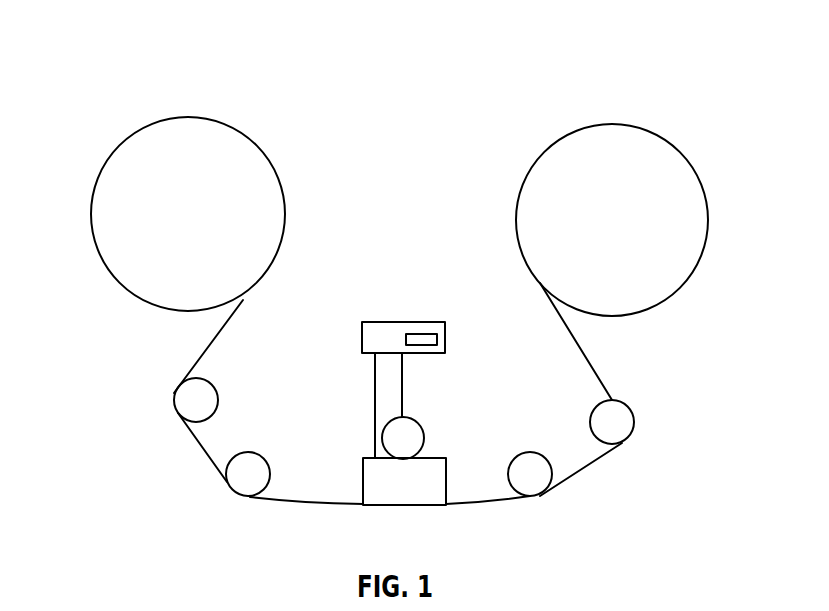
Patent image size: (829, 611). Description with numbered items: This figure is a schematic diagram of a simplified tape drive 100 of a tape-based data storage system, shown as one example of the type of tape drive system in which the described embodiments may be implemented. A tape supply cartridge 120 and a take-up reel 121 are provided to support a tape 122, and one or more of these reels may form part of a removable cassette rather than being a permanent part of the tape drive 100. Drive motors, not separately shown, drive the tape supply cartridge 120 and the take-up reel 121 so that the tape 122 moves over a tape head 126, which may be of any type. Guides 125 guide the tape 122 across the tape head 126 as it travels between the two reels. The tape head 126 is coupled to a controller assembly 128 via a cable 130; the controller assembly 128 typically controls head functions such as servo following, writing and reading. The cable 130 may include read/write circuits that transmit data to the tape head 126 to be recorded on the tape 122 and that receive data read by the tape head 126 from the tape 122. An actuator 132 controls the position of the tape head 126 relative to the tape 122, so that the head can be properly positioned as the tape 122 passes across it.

The tape drive 100 is at (95, 120).
The tape supply cartridge 120 is at (188, 116).
The take-up reel 121 is at (613, 123).
The tape 122 is at (303, 502).
The guides 125 is at (218, 397).
The tape head 126 is at (447, 480).
The controller assembly 128 is at (401, 322).
The cable 130 is at (375, 437).
The actuator 132 is at (422, 420).